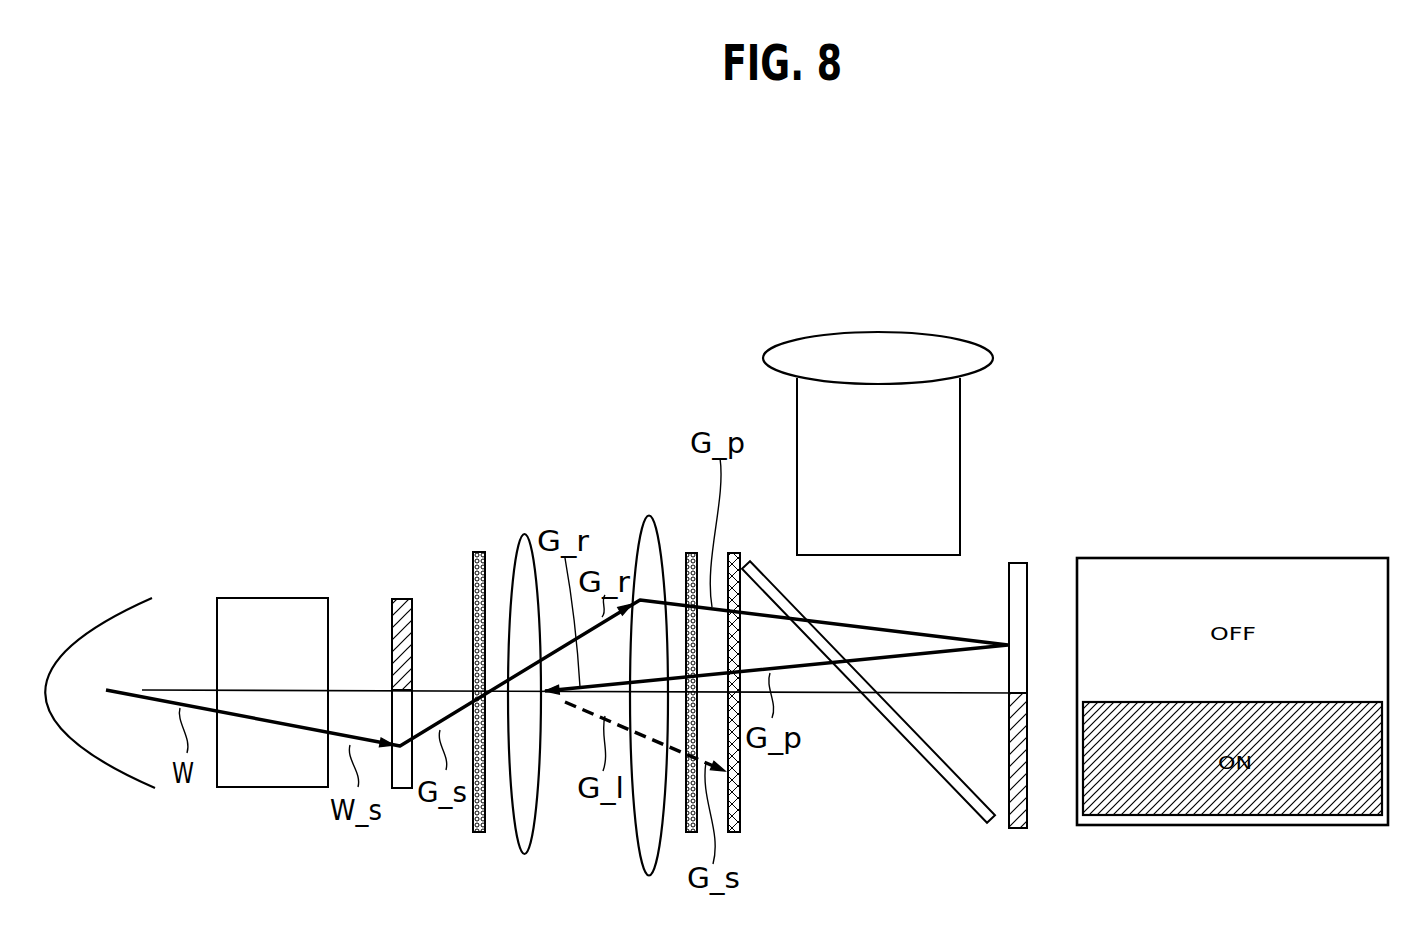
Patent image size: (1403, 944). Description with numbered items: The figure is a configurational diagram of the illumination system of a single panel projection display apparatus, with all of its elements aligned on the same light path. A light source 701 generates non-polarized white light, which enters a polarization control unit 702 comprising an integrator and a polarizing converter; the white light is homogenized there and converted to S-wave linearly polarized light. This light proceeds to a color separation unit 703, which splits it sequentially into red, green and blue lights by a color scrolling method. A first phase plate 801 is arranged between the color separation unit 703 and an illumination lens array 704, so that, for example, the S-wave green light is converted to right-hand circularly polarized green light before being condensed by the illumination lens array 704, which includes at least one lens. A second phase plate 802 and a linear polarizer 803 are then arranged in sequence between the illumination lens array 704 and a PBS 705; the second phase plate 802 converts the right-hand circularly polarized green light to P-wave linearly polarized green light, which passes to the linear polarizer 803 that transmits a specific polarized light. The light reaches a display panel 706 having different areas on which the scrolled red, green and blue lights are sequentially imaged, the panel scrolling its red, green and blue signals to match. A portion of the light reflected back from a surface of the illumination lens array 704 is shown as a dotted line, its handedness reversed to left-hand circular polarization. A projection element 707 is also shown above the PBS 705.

The light source 701 is at (113, 613).
The polarization control unit 702 is at (268, 598).
The color separation unit 703 is at (398, 790).
The illumination lens array 704 is at (640, 836).
The PBS 705 is at (963, 808).
The display panel 706 is at (1018, 562).
The projection lens 707 is at (993, 357).
The first phase plate 801 is at (479, 551).
The second phase plate 802 is at (690, 552).
The linear polarizer 803 is at (733, 552).